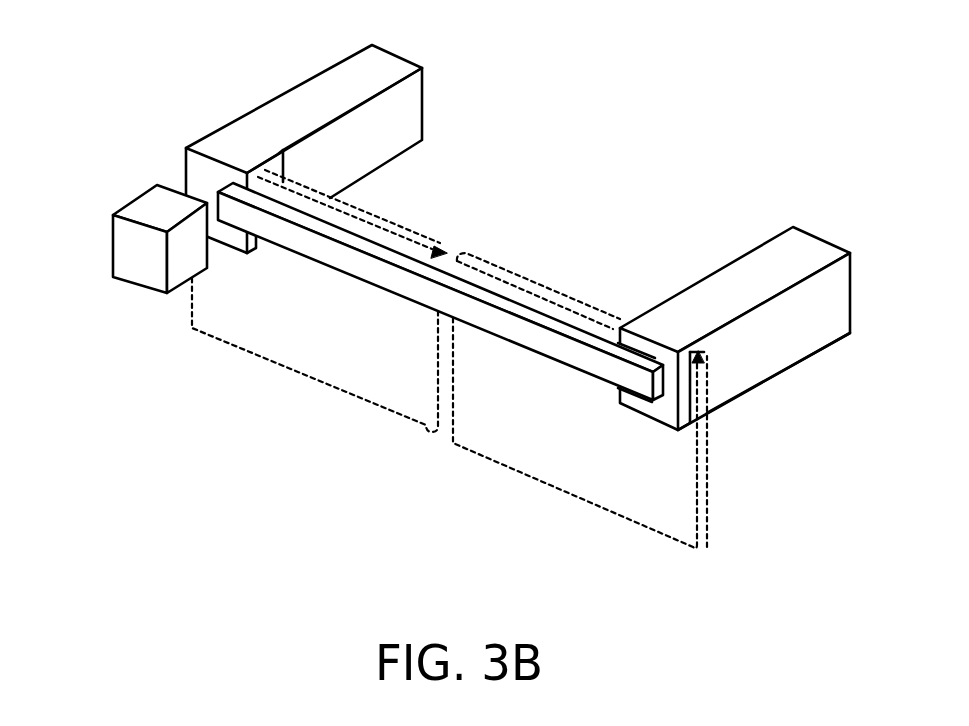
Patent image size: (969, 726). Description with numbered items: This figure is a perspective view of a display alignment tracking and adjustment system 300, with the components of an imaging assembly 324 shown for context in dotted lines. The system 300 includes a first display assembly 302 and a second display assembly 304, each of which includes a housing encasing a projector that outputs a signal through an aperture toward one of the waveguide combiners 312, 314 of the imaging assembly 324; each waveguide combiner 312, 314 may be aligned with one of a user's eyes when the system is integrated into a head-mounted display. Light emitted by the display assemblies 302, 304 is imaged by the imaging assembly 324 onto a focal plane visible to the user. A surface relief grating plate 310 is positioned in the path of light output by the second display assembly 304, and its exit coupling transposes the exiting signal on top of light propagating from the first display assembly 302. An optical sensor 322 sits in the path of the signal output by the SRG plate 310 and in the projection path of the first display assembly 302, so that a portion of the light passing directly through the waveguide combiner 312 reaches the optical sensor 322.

The display alignment tracking and adjustment system 300 is at (435, 296).
The first display assembly 302 is at (383, 149).
The second display assembly 304 is at (795, 349).
The surface relief grating (SRG) plate 310 is at (507, 315).
The waveguide combiner 312 is at (343, 337).
The waveguide combiner 314 is at (567, 435).
The optical sensor 322 is at (150, 257).
The imaging assembly 324 is at (478, 435).